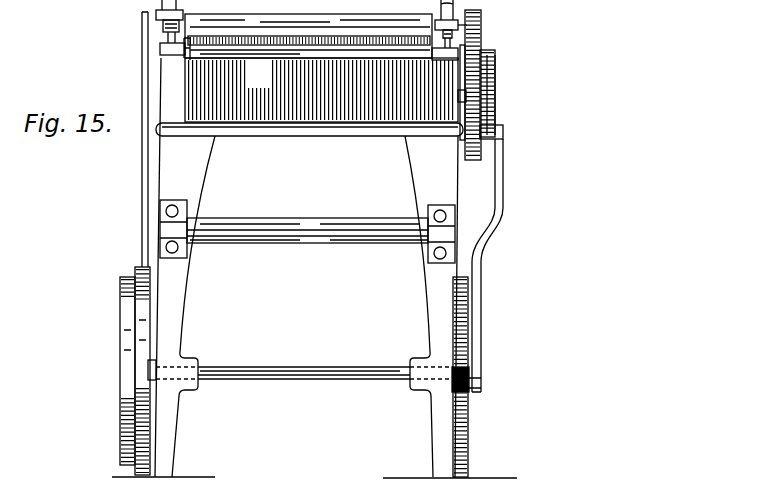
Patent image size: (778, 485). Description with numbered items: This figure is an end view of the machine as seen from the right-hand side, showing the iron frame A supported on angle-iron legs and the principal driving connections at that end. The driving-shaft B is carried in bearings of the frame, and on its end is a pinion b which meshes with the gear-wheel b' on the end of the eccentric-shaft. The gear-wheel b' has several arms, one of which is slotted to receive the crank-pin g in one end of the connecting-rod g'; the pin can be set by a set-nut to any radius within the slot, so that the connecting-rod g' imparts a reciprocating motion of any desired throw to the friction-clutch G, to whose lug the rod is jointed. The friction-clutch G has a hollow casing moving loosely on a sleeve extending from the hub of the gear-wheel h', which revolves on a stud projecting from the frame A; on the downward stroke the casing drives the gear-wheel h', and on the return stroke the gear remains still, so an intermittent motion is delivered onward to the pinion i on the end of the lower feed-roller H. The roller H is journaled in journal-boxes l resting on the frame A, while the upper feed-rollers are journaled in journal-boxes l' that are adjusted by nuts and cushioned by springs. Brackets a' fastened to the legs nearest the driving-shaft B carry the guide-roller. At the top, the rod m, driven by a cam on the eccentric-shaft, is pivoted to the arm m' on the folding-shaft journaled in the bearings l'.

The rod m is at (135, 139).
The arm m' is at (154, 10).
The journal-box l' is at (154, 33).
The journal-box l is at (318, 85).
The feed-roller H is at (428, 37).
The pinion i is at (476, 17).
The gear-wheel h' is at (501, 93).
The friction-clutch G is at (489, 88).
The connecting-rod g' is at (492, 265).
The crank-pin g is at (488, 381).
The gear-wheel b' is at (478, 377).
The pinion b is at (473, 391).
The bracket a' is at (307, 219).
The driving-shaft B is at (383, 371).
The frame A is at (321, 90).